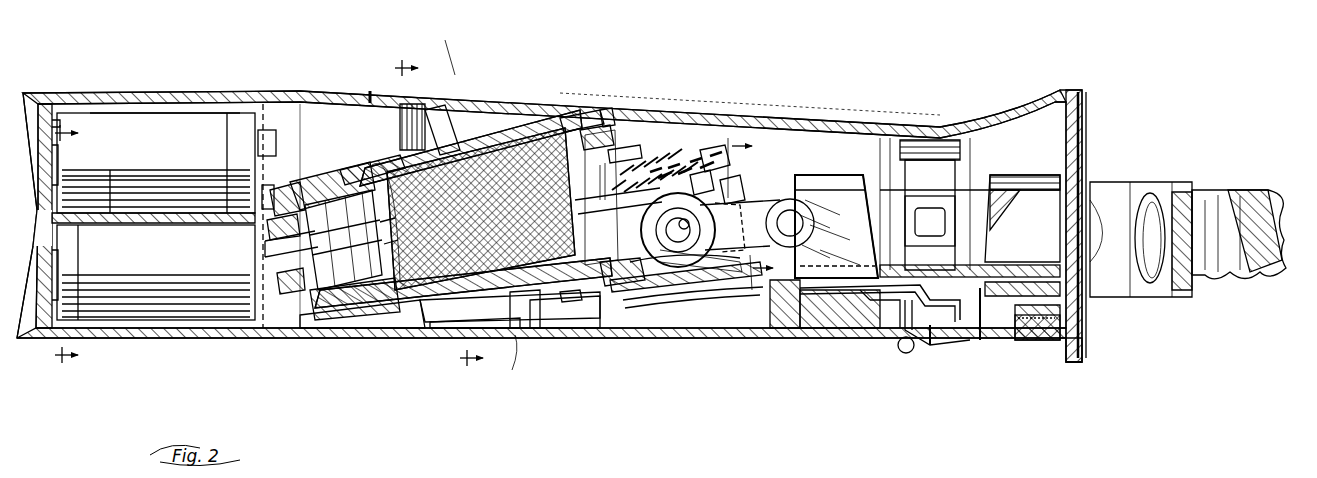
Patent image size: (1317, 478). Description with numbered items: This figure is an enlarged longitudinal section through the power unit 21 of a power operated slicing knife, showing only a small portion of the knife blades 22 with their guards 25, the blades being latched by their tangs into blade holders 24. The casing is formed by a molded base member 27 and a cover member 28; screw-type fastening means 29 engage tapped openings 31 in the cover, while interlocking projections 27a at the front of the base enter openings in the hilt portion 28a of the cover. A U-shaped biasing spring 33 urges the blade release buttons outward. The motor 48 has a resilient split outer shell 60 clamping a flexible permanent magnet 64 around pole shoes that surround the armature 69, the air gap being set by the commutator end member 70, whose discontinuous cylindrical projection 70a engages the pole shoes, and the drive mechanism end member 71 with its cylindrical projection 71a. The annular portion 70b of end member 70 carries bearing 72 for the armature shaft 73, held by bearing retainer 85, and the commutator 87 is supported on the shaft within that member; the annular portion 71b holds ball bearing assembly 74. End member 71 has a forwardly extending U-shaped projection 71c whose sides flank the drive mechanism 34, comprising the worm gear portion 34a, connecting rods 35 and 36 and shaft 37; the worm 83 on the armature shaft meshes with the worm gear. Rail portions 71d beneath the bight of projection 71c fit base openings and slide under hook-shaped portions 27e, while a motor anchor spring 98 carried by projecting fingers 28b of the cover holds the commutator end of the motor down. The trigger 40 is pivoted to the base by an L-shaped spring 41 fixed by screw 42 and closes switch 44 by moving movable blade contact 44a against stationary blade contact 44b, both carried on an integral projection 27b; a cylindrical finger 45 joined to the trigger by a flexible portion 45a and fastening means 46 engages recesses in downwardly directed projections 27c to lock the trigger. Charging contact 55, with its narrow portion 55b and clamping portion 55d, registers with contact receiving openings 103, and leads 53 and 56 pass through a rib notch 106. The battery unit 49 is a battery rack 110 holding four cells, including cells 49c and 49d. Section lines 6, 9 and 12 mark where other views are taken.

The power unit 21 is at (748, 112).
The knife blades 22 is at (1258, 186).
The blade holders 24 is at (966, 190).
The guards 25 is at (1160, 182).
The base member 27 is at (190, 360).
The interlocking projections 27a is at (1082, 350).
The integral projection 27b is at (822, 335).
The downwardly directed projections 27c is at (880, 340).
The hook-shaped portion 27e is at (836, 226).
The cover member 28 is at (632, 100).
The hilt portion 28a is at (1075, 360).
The projecting fingers 28b is at (370, 90).
The screw-type fastening means 29 is at (265, 340).
The tapped openings 31 is at (278, 150).
The U-shaped biasing spring 33 is at (935, 140).
The drive mechanism 34 is at (700, 270).
The worm gear portion 34a is at (654, 175).
The connecting rod 35 is at (735, 225).
The connecting rod 36 is at (782, 186).
The shaft 37 is at (677, 244).
The switch actuator or trigger 40 is at (945, 340).
The L-shaped spring 41 is at (1030, 262).
The screw 42 is at (1066, 308).
The switch 44 is at (928, 290).
The movable blade contact 44a is at (892, 330).
The stationary blade contact 44b is at (860, 300).
The cylindrical finger 45 is at (906, 354).
The flexible portion 45a is at (935, 348).
The fastening means 46 is at (975, 306).
The motor 48 is at (470, 132).
The battery unit 49 is at (165, 140).
The nickel cadmium cell 49c is at (140, 272).
The nickel cadmium cell 49d is at (238, 173).
The conductor 53 is at (690, 280).
The charging contact 55 is at (510, 308).
The narrow portion 55b is at (448, 328).
The clamping portion 55d is at (586, 330).
The conductor 56 is at (628, 290).
The cylindrical outer shell 60 is at (578, 116).
The flexible permanent magnet 64 is at (520, 140).
The armature 69 is at (380, 328).
The commutator end member 70 is at (318, 186).
The discontinuous cylindrical projection 70a is at (370, 172).
The annular portion 70b is at (320, 328).
The drive mechanism end member 71 is at (612, 108).
The cylindrical projection 71a is at (592, 128).
The annular portion 71b is at (606, 150).
The U-shaped projection 71c is at (742, 186).
The rail portions 71d is at (700, 310).
The bearing 72 is at (270, 234).
The armature shaft 73 is at (278, 276).
The ball bearing assembly 74 is at (649, 170).
The worm 83 is at (700, 172).
The bearing retainer 85 is at (300, 185).
The commutator 87 is at (343, 240).
The motor anchor spring 98 is at (440, 108).
The contact receiving openings 103 is at (530, 328).
The notch 106 is at (570, 312).
The battery rack 110 is at (68, 170).
The section line 6- 6 is at (456, 206).
The section line 9- 9 is at (76, 248).
The section line 12- 12 is at (763, 214).